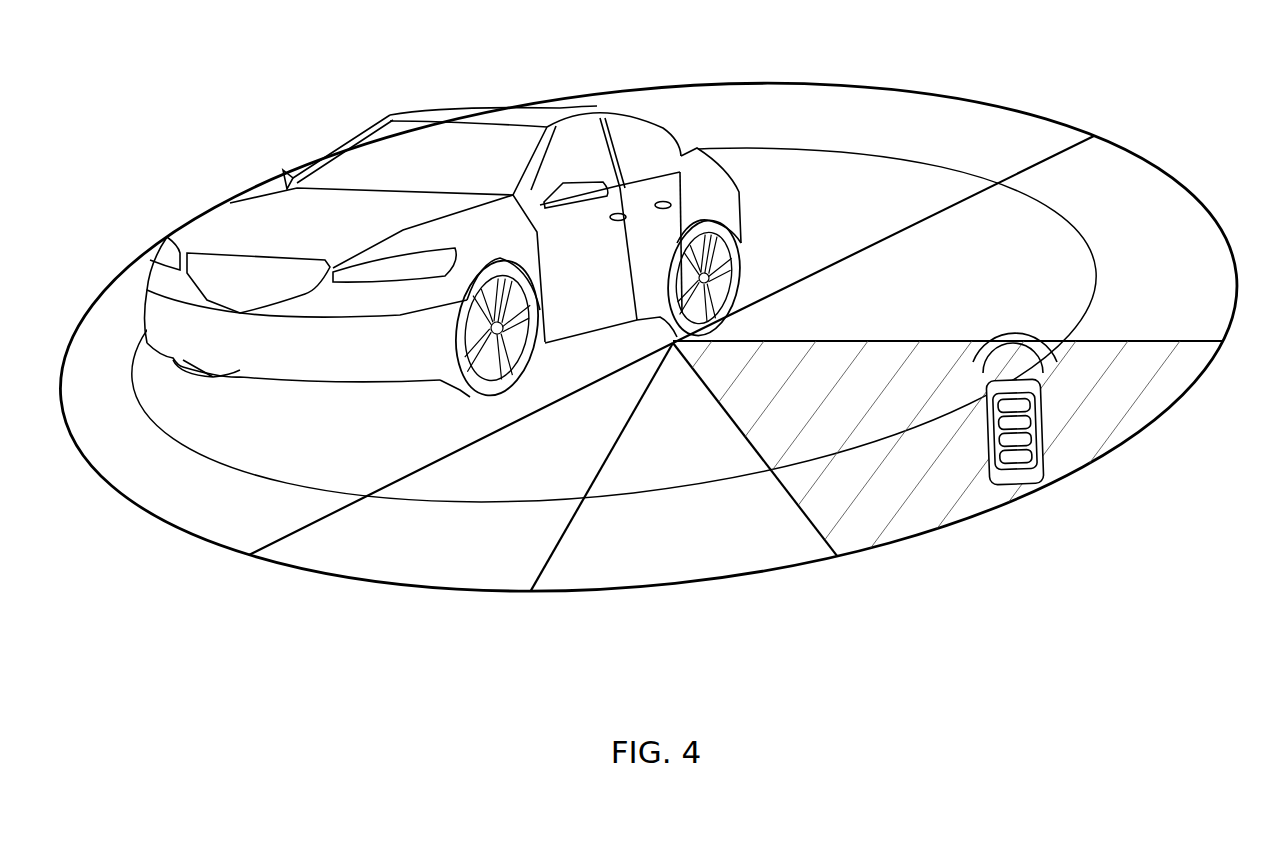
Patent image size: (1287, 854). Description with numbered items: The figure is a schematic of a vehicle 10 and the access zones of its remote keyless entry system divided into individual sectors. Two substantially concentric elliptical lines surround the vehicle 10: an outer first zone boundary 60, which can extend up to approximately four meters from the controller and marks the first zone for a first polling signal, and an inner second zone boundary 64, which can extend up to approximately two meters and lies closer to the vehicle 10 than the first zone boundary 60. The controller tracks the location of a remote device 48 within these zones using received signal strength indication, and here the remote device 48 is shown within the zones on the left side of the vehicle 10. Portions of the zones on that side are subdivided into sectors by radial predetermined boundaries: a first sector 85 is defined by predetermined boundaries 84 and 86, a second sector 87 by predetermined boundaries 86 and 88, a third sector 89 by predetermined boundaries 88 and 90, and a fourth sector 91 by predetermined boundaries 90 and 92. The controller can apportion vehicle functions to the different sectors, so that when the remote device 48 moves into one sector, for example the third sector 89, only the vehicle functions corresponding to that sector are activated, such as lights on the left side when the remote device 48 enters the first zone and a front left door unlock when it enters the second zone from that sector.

The vehicle 10 is at (350, 84).
The remote device 48 is at (1040, 466).
The first zone boundary 60 is at (1128, 158).
The second zone boundary 64 is at (1080, 236).
The predetermined boundary 84 is at (298, 533).
The first sector 85 is at (385, 557).
The predetermined boundary 86 is at (548, 560).
The second sector 87 is at (655, 557).
The predetermined boundary 88 is at (816, 535).
The third sector 89 is at (1140, 398).
The predetermined boundary 90 is at (1183, 338).
The fourth sector 91 is at (1163, 197).
The predetermined boundary 92 is at (1060, 149).